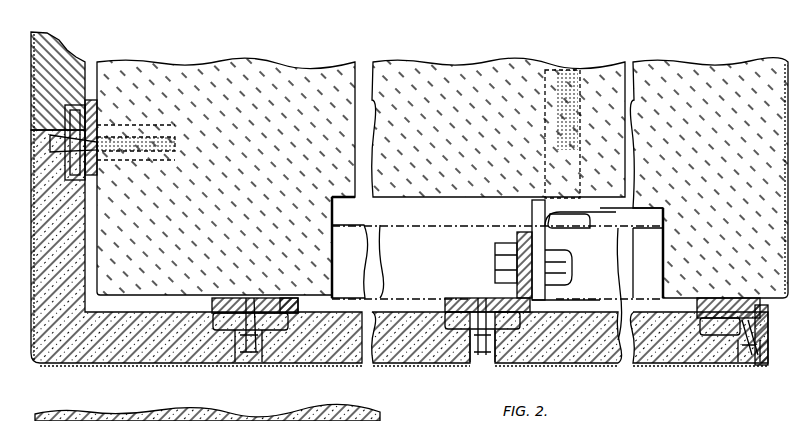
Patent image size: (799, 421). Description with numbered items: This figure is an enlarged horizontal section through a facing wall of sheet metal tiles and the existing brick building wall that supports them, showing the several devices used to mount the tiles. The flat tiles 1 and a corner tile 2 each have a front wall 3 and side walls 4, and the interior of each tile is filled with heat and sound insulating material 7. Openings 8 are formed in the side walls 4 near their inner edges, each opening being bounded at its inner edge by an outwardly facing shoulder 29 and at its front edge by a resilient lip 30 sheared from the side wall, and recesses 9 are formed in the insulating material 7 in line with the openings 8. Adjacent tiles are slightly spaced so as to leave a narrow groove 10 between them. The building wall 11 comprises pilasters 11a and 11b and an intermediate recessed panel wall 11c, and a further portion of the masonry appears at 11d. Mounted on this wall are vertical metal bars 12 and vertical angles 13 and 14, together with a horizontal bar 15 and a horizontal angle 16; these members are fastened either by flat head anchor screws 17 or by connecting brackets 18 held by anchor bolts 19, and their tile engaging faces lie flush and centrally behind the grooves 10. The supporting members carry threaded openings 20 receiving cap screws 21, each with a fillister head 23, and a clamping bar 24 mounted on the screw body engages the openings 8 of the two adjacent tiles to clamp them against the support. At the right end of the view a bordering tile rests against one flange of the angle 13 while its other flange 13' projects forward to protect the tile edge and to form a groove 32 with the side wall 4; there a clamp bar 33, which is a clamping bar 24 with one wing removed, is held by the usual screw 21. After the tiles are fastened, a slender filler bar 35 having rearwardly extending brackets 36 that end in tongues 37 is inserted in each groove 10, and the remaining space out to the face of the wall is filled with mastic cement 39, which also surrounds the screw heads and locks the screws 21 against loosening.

The sheet metal tile 1 is at (38, 30).
The corner tile 2 is at (66, 368).
The front wall 3 is at (350, 380).
The side wall 4 is at (370, 215).
The insulating material 7 is at (78, 58).
The opening 8 is at (478, 374).
The recess 9 is at (409, 318).
The groove 10 is at (255, 358).
The building wall 11 is at (292, 66).
The pilaster 11a is at (350, 247).
The pilaster 11b is at (631, 274).
The recessed panel wall 11c is at (450, 198).
The adjacent panel 11d is at (120, 414).
The vertical metal bar 12 is at (100, 150).
The vertical angle 13 is at (701, 253).
The angle flange 13' is at (776, 341).
The vertical angle 14 is at (515, 250).
The horizontal metal bar 15 is at (152, 300).
The horizontal angle 16 is at (400, 235).
The anchor screw 17 is at (128, 130).
The connecting bracket 18 is at (540, 210).
The anchor bolt 19 is at (540, 198).
The threaded opening 20 is at (258, 312).
The cap screw 21 is at (482, 296).
The fillister head 23 is at (215, 362).
The clamping bar 24 is at (450, 315).
The shoulder 29 is at (285, 298).
The lip 30 is at (748, 330).
The groove 32 is at (745, 362).
The clamp bar 33 is at (769, 340).
The filler bar 35 is at (262, 358).
The bracket 36 is at (318, 362).
The tongue 37 is at (588, 288).
The mastic cement 39 is at (245, 360).